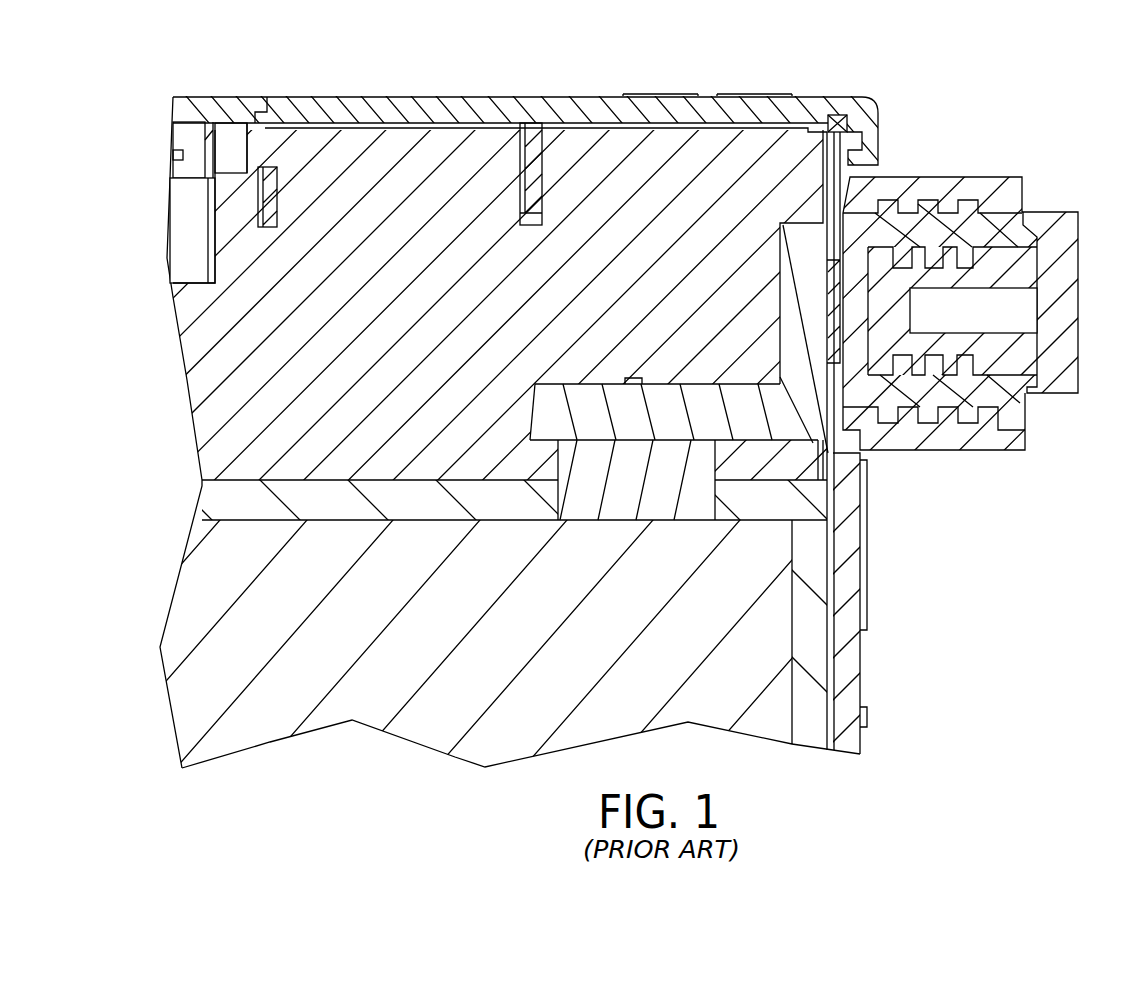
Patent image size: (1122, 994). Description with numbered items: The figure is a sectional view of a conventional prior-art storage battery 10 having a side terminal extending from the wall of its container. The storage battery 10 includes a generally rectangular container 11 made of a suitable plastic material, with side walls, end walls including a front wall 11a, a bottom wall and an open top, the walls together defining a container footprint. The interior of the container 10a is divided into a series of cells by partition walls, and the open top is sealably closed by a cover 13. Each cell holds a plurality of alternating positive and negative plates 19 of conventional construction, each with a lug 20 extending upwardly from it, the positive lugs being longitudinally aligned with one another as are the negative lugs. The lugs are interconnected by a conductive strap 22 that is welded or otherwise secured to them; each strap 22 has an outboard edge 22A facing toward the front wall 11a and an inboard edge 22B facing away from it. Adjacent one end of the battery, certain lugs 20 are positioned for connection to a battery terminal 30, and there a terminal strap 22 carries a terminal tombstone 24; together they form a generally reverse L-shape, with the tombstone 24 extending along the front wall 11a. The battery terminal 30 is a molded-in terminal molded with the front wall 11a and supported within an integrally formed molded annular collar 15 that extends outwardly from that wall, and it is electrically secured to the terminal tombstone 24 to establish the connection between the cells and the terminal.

The storage battery 10 is at (978, 67).
The interior of the container 10a is at (818, 610).
The container 11 is at (860, 697).
The front wall 11a is at (860, 453).
The cover 13 is at (599, 106).
The annular collar 15 is at (946, 186).
The positive and negative plates 19 is at (760, 667).
The lug 20 is at (720, 497).
The conductive strap 22 is at (793, 418).
The outboard edge 22A is at (818, 406).
The inboard edge 22B is at (543, 410).
The terminal tombstone 24 is at (783, 225).
The battery terminal 30 is at (1030, 212).